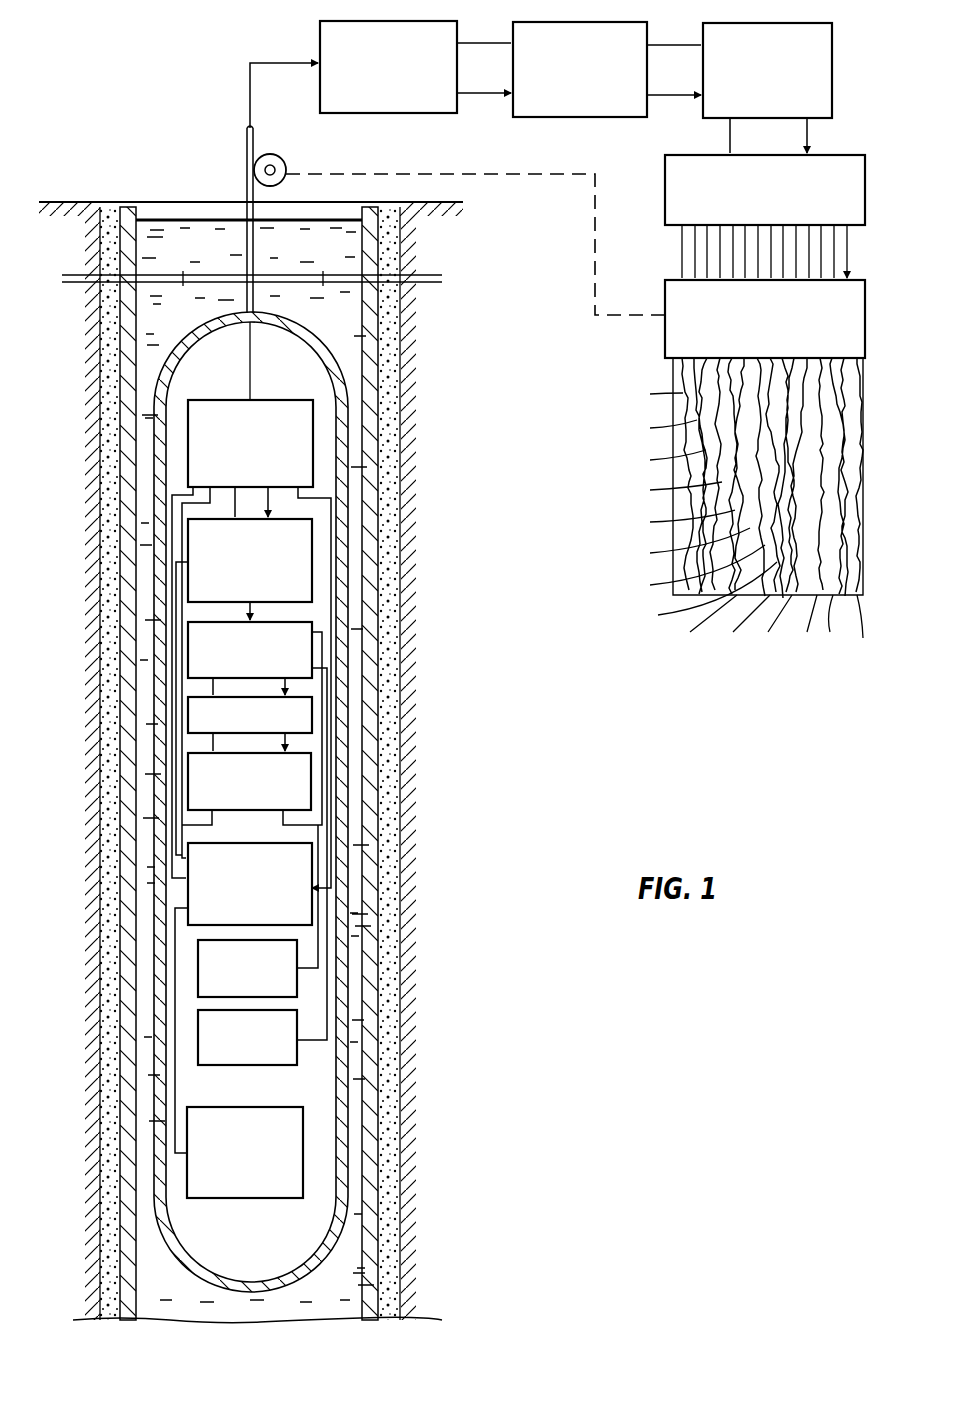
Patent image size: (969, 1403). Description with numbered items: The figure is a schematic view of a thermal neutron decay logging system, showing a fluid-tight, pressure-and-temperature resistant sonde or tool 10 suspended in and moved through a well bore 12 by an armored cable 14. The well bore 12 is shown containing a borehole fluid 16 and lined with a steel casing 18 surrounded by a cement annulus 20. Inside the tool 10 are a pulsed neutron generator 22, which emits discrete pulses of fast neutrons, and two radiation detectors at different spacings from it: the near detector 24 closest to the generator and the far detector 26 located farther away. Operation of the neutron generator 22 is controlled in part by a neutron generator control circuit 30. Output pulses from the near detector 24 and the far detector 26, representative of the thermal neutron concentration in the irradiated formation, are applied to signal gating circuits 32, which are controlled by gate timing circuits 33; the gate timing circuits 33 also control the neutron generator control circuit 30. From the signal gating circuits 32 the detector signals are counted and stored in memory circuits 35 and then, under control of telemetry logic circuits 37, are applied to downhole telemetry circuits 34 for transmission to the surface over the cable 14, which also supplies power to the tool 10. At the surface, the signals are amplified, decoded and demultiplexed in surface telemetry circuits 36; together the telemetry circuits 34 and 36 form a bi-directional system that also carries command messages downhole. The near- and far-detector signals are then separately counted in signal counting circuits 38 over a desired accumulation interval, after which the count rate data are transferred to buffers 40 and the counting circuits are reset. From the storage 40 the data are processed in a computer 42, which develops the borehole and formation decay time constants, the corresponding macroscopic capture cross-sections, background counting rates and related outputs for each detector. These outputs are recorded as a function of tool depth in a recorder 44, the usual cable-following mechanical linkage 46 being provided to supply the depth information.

The sonde or tool 10 is at (193, 323).
The well bore 12 is at (197, 199).
The armored cable 14 is at (247, 144).
The borehole fluid 16 is at (293, 256).
The steel casing 18 is at (124, 398).
The cement annulus 20 is at (120, 503).
The pulsed neutron generator 22 is at (303, 1170).
The near detector 24 is at (297, 1055).
The far detector 26 is at (297, 980).
The neutron generator control circuit 30 is at (312, 890).
The signal gating circuits 32 is at (188, 652).
The gate timing circuits 33 is at (312, 578).
The downhole telemetry circuits 34 is at (313, 455).
The memory circuits 35 is at (312, 718).
The surface telemetry circuits 36 is at (400, 113).
The telemetry logic circuits 37 is at (311, 790).
The signal counting circuits 38 is at (592, 117).
The buffers 40 is at (832, 82).
The computer 42 is at (665, 200).
The recorder 44 is at (665, 340).
The cable-following mechanical linkage 46 is at (554, 177).